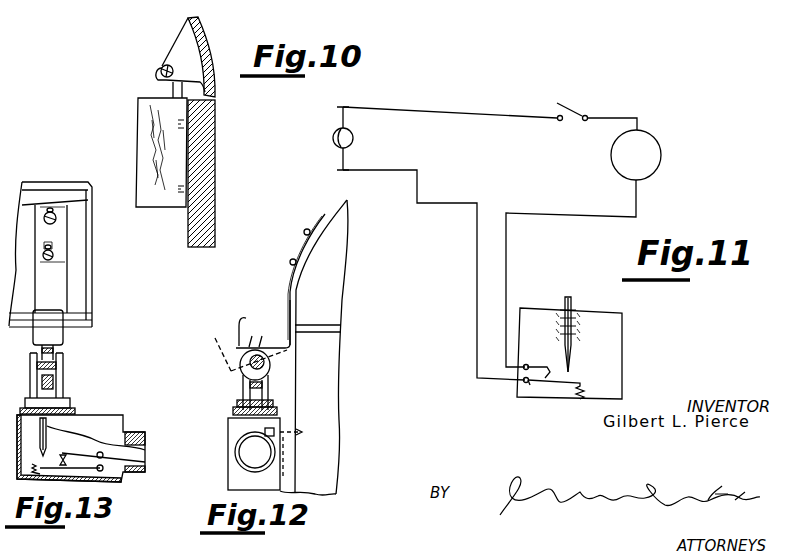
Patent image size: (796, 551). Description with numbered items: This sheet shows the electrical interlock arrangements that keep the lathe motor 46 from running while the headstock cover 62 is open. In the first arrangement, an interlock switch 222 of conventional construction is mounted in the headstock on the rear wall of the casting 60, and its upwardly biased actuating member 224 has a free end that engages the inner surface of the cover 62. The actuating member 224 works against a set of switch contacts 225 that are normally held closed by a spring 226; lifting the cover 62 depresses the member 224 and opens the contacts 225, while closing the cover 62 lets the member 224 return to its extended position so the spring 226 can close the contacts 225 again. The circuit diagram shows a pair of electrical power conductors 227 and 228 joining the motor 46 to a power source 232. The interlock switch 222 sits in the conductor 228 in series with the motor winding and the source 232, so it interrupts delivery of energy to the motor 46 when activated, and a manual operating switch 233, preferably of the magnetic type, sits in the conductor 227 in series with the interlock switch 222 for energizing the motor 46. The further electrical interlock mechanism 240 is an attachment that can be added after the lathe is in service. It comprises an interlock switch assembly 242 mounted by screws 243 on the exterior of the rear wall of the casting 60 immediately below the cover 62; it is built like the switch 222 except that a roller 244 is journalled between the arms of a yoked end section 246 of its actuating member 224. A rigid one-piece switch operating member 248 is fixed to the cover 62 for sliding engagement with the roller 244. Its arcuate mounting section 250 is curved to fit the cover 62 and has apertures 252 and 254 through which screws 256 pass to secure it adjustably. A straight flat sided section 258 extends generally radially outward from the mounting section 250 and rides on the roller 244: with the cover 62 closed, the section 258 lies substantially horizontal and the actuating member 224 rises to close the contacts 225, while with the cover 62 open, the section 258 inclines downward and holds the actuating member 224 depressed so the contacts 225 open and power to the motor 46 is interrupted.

In FIG. 11, the motor 46 is at (650, 165).
In FIG. 10, the casting 60 is at (213, 197).
In FIG. 13, the casting 60 is at (92, 326).
In FIG. 12, the casting 60 is at (321, 464).
In FIG. 10, the cover 62 is at (210, 41).
In FIG. 13, the cover 62 is at (88, 280).
In FIG. 12, the cover 62 is at (338, 263).
In FIG. 10, the interlock switch 222 is at (133, 110).
In FIG. 10, the actuating member 224 is at (163, 66).
In FIG. 11, the actuating member 224 is at (575, 300).
In FIG. 13, the actuating member 224 is at (48, 430).
In FIG. 12, the actuating member 224 is at (270, 399).
In FIG. 11, the switch contacts 225 is at (533, 385).
In FIG. 13, the switch contacts 225 is at (82, 462).
In FIG. 11, the spring 226 is at (586, 385).
In FIG. 11, the electrical power conductor 227 is at (462, 112).
In FIG. 11, the electrical power conductor 228 is at (549, 215).
In FIG. 13, the electrical power conductor 228 is at (152, 460).
In FIG. 11, the power source 232 is at (360, 141).
In FIG. 11, the manual operating switch 233 is at (582, 107).
In FIG. 12, the electrical interlock mechanism 240 is at (225, 393).
In FIG. 13, the interlock switch assembly 242 is at (83, 420).
In FIG. 12, the interlock switch assembly 242 is at (227, 421).
In FIG. 12, the screws 243 is at (299, 460).
In FIG. 13, the roller 244 is at (62, 352).
In FIG. 12, the roller 244 is at (268, 364).
In FIG. 13, the yoked end section 246 is at (58, 384).
In FIG. 13, the switch operating member 248 is at (70, 249).
In FIG. 12, the switch operating member 248 is at (288, 283).
In FIG. 13, the arcuate mounting section 250 is at (62, 295).
In FIG. 12, the arcuate mounting section 250 is at (289, 306).
In FIG. 13, the aperture 252 is at (55, 246).
In FIG. 13, the aperture 254 is at (57, 214).
In FIG. 13, the screws 256 is at (46, 211).
In FIG. 12, the screws 256 is at (294, 258).
In FIG. 12, the straight flat sided section 258 is at (259, 332).